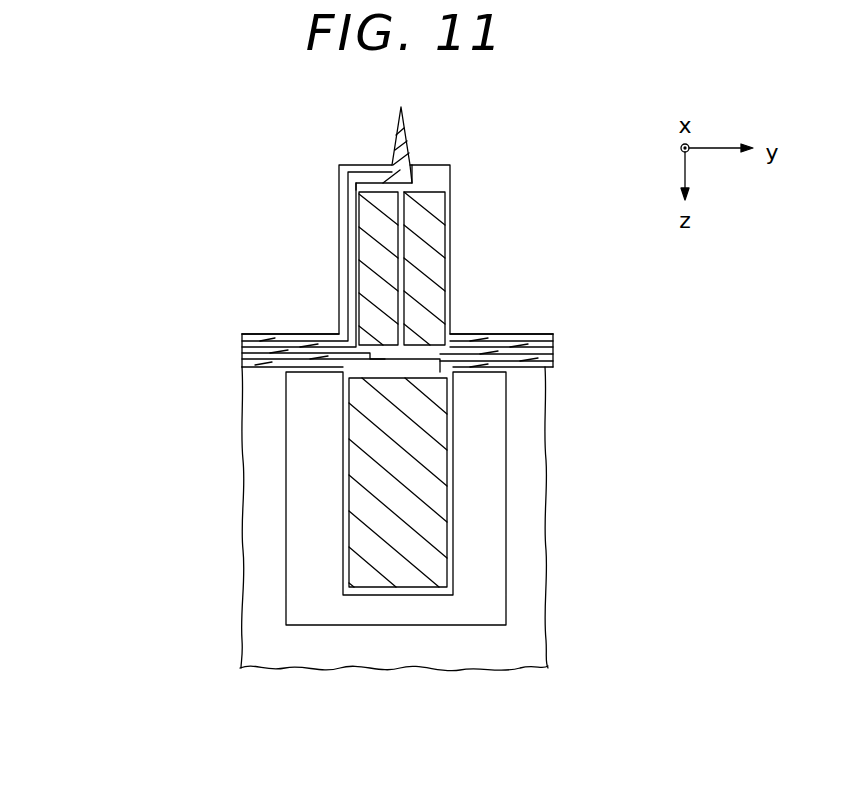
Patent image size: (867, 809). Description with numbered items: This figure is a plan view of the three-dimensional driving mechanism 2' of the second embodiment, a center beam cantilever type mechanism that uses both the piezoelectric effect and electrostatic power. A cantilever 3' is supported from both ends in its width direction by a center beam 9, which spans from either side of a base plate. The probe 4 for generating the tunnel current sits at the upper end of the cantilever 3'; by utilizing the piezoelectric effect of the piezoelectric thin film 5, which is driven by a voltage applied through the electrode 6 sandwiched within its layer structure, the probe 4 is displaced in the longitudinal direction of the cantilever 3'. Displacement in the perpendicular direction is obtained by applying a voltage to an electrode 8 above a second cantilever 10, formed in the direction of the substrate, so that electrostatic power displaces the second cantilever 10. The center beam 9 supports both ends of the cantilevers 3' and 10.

The three-dimensional driving mechanism 2' is at (346, 454).
The cantilever 3' is at (327, 237).
The probe 4 is at (403, 133).
The piezoelectric thin film 5 is at (452, 173).
The electrode 6 is at (242, 355).
The electrode 8 is at (437, 422).
The center beam 9 is at (303, 333).
The second cantilever 10 is at (334, 582).